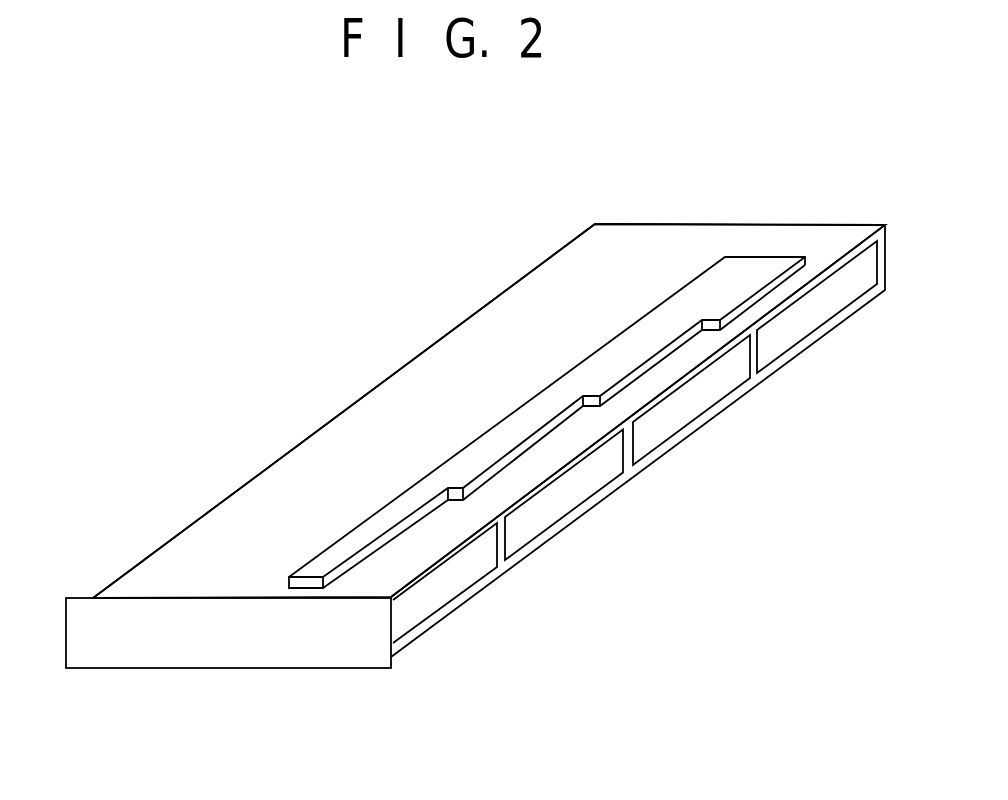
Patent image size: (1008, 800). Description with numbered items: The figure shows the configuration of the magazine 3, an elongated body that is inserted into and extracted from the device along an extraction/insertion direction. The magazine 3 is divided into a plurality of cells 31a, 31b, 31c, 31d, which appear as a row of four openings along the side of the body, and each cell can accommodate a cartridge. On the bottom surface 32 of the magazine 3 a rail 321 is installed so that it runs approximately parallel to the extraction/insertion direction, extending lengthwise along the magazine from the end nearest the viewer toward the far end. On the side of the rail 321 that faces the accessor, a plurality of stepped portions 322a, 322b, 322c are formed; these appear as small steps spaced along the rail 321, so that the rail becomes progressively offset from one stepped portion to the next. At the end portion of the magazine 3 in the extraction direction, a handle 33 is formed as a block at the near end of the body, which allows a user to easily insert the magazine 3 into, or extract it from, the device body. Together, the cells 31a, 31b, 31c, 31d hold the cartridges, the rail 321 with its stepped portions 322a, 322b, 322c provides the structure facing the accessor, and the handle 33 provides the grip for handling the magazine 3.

The magazine 3 is at (480, 415).
The cell 31a is at (473, 591).
The cell 31b is at (592, 501).
The cell 31c is at (710, 409).
The cell 31d is at (835, 311).
The bottom surface 32 is at (489, 411).
The rail 321 is at (533, 379).
The stepped portion 322a is at (320, 455).
The stepped portion 322b is at (472, 348).
The stepped portion 322c is at (582, 273).
The handle 33 is at (219, 596).